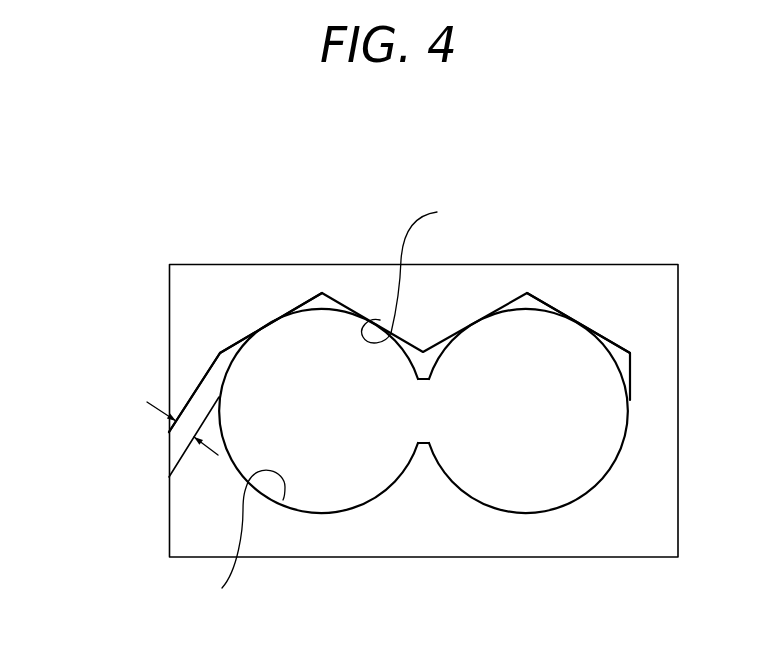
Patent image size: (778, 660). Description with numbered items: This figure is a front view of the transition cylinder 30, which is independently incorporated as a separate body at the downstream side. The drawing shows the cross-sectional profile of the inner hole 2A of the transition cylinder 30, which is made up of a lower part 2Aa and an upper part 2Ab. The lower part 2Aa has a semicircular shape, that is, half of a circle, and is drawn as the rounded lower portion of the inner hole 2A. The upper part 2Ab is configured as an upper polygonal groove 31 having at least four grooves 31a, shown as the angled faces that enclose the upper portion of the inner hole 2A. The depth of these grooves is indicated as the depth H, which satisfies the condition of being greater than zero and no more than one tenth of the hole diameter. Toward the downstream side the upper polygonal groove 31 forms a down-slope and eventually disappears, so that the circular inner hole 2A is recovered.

The transition cylinder 30 is at (380, 558).
The upper polygonal groove 31 is at (241, 323).
The grooves 31a is at (218, 350).
The inner hole 2A is at (488, 458).
The lower part 2Aa is at (241, 544).
The upper part 2Ab is at (419, 269).
The depth of the grooves H is at (181, 437).